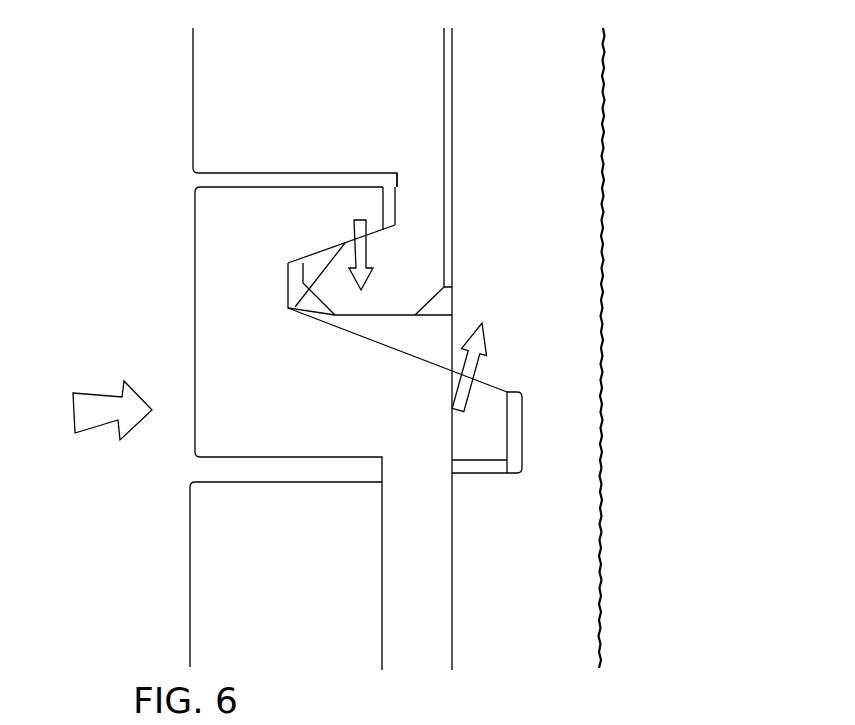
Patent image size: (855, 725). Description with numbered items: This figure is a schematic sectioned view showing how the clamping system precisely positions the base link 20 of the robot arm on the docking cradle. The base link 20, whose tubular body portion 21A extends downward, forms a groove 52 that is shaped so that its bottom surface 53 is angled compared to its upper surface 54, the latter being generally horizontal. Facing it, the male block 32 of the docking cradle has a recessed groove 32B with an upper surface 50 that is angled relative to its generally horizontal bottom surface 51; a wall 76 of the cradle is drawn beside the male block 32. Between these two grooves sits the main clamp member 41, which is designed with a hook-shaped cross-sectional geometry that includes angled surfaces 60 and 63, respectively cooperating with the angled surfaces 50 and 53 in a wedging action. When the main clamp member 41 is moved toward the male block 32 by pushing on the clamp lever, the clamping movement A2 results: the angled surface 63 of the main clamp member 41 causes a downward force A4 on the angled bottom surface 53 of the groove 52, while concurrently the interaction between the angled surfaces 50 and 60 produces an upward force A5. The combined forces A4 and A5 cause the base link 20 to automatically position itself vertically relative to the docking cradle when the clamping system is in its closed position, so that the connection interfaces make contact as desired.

The first housing portion 21A is at (191, 101).
The base link 20 is at (350, 69).
The main clamp member 41 is at (251, 368).
The male block 32 is at (563, 243).
The recessed groove 32B is at (540, 432).
The wall 76 is at (639, 376).
The groove 52 is at (366, 203).
The upper surface 54 is at (397, 175).
The bottom surface 53 is at (393, 223).
The angled surface 60 is at (404, 346).
The angled surface 63 is at (295, 307).
The upper surface 50 is at (497, 392).
The bottom surface 51 is at (484, 460).
The clamping movement A2 is at (112, 388).
The downward force A4 is at (363, 272).
The upward force A5 is at (461, 387).